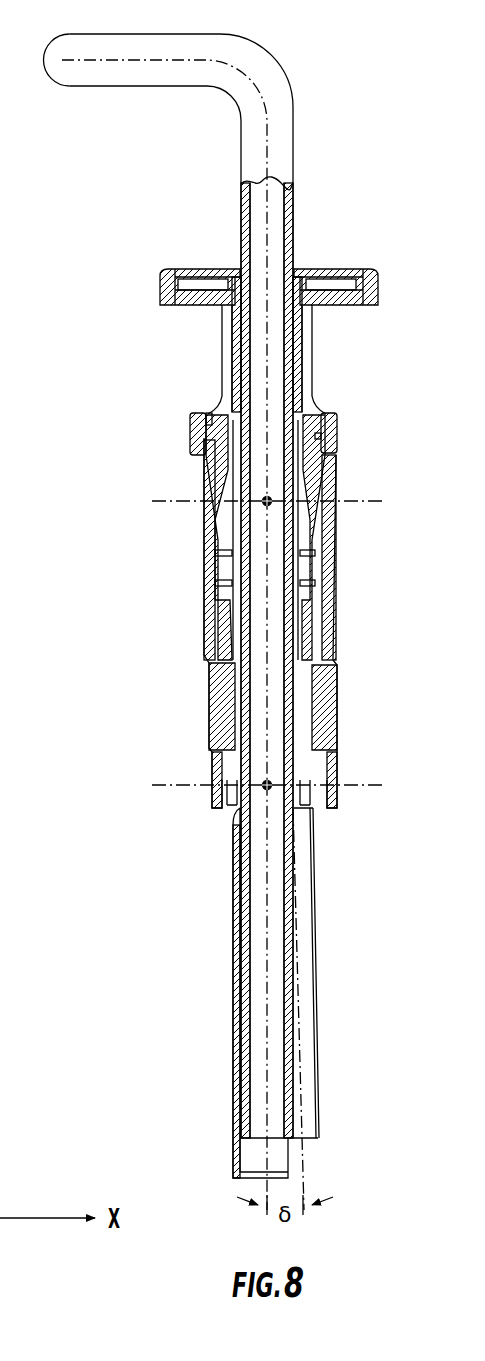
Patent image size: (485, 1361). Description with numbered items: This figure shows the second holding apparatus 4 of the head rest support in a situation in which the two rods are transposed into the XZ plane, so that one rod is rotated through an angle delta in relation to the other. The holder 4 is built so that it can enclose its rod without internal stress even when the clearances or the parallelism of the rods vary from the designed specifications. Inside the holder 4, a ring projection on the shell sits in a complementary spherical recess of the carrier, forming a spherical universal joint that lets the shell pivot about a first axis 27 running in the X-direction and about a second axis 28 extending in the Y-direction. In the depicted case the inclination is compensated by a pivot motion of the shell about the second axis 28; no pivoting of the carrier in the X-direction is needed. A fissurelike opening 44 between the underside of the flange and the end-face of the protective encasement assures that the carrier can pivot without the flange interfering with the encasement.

The second holding apparatus 4 is at (196, 703).
The first axis 27 is at (172, 500).
The second axis 28 is at (266, 504).
The fissurelike opening 44 is at (338, 448).